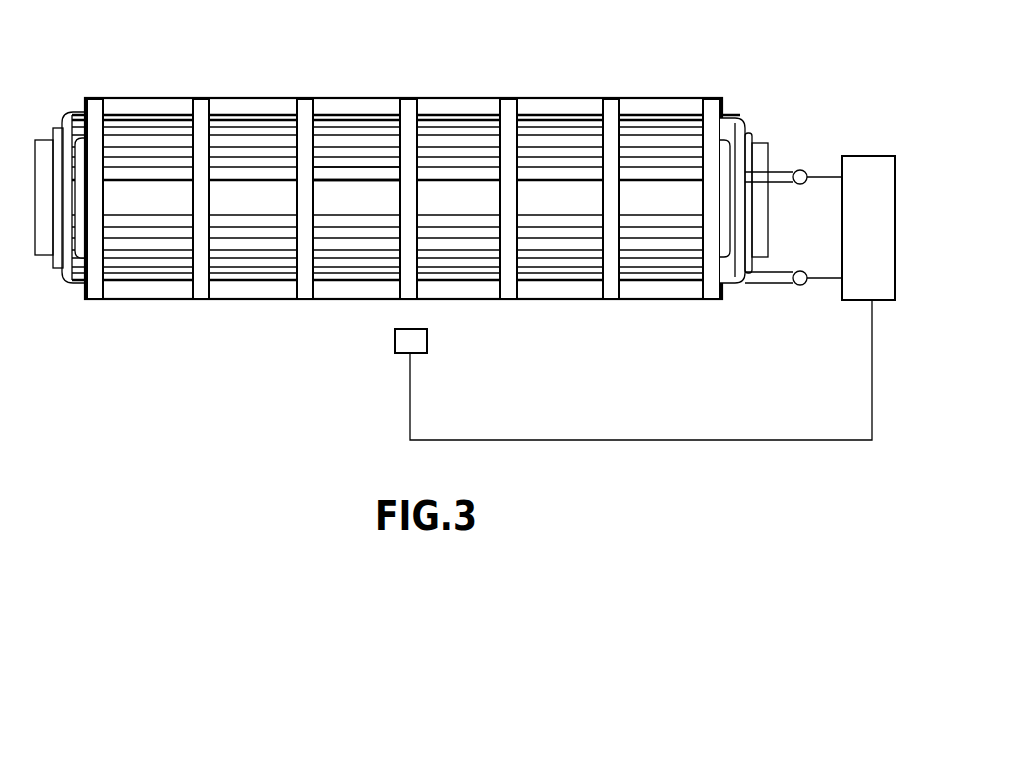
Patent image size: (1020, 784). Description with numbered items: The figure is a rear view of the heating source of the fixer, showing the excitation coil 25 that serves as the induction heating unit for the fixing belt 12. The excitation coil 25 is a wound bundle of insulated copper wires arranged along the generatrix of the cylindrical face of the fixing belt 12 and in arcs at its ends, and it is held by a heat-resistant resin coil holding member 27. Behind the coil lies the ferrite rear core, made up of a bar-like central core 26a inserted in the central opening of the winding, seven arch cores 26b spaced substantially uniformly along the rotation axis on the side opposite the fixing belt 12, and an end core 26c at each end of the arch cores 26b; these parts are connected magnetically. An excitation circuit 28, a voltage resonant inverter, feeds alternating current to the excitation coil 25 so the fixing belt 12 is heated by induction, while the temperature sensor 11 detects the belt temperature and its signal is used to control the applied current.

The temperature sensor 11 is at (422, 340).
The fixing belt 12 is at (765, 152).
The excitation coil 25 is at (172, 147).
The central core 26a is at (362, 187).
The arch core 26b is at (508, 115).
The end core 26c is at (257, 103).
The coil holding member 27 is at (750, 133).
The excitation circuit 28 is at (865, 165).